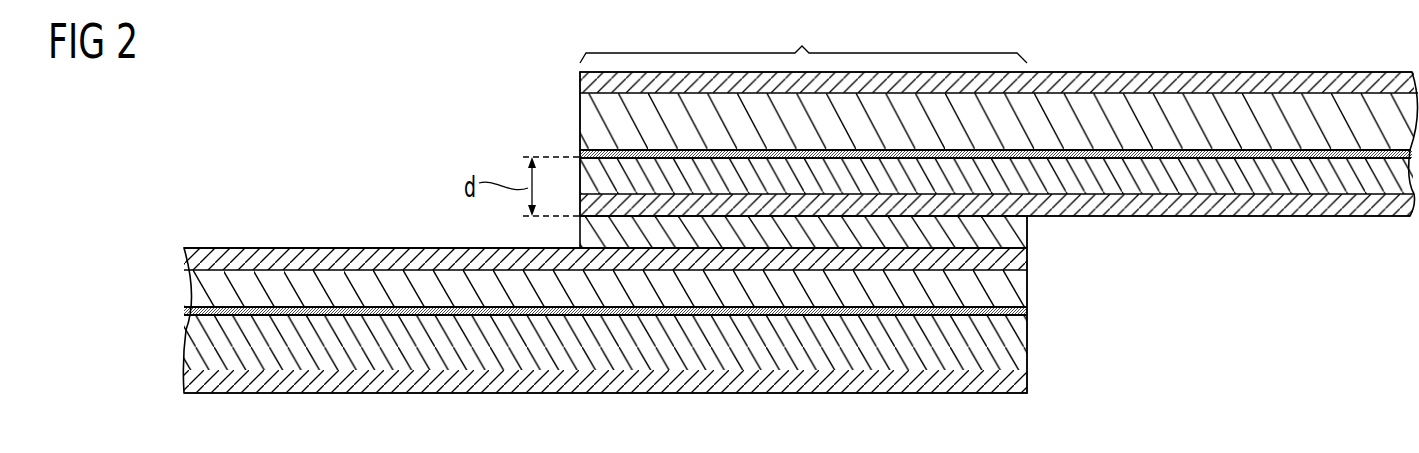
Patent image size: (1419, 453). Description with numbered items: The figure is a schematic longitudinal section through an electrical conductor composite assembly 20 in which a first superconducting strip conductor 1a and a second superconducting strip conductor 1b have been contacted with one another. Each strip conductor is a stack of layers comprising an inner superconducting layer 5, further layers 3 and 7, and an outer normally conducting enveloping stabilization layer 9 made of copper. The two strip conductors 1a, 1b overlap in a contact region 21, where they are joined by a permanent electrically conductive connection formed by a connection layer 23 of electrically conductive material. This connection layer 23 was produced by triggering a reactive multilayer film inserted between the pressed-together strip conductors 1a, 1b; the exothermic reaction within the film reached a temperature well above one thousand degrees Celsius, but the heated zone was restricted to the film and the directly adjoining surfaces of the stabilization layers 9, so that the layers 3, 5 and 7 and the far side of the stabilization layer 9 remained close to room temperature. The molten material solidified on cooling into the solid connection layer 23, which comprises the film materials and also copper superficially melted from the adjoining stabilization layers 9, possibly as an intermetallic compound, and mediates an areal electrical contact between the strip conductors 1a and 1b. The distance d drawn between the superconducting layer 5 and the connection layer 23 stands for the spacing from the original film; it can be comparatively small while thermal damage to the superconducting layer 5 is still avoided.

The first superconducting strip conductor 1a is at (278, 242).
The second superconducting strip conductor 1b is at (1316, 222).
The layer of the strip conductor 3 is at (597, 110).
The superconducting layer 5 is at (580, 153).
The layer of the strip conductor 7 is at (1020, 298).
The stabilization layer 9 is at (1018, 262).
The electrical conductor composite assembly 20 is at (313, 106).
The contact region 21 is at (803, 38).
The connection layer 23 is at (1017, 237).